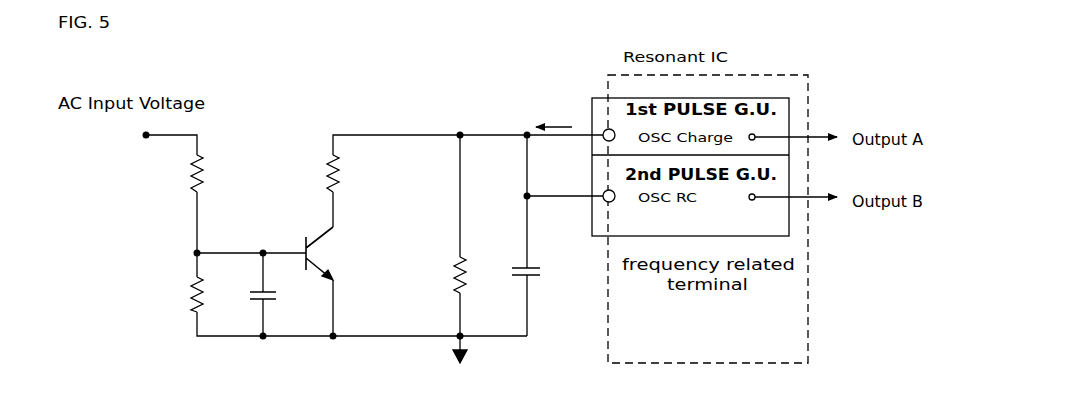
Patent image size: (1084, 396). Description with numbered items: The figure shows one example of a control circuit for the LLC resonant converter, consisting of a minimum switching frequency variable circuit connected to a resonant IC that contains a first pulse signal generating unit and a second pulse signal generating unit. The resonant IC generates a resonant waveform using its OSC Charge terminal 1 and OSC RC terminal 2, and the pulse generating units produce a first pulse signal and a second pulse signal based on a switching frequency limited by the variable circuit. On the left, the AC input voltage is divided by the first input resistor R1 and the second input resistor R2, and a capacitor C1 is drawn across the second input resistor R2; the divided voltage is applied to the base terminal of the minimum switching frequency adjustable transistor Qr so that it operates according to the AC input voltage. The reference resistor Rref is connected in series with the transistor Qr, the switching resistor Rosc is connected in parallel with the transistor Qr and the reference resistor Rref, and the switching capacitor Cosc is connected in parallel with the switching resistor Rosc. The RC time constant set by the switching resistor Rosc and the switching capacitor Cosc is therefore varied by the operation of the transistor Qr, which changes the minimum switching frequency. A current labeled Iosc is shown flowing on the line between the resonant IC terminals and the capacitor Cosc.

The first terminal (OSC Charge) 1 is at (614, 139).
The second terminal (OSC RC) 2 is at (614, 200).
The first input resistor R1 is at (211, 174).
The second input resistor R2 is at (210, 295).
The first capacitor C1 is at (276, 301).
The minimum switching frequency adjustable transistor Qr is at (334, 253).
The reference resistor Rref is at (358, 174).
The switching resistor Rosc is at (433, 275).
The switching capacitor Cosc is at (547, 275).
The oscillator current Iosc is at (554, 111).